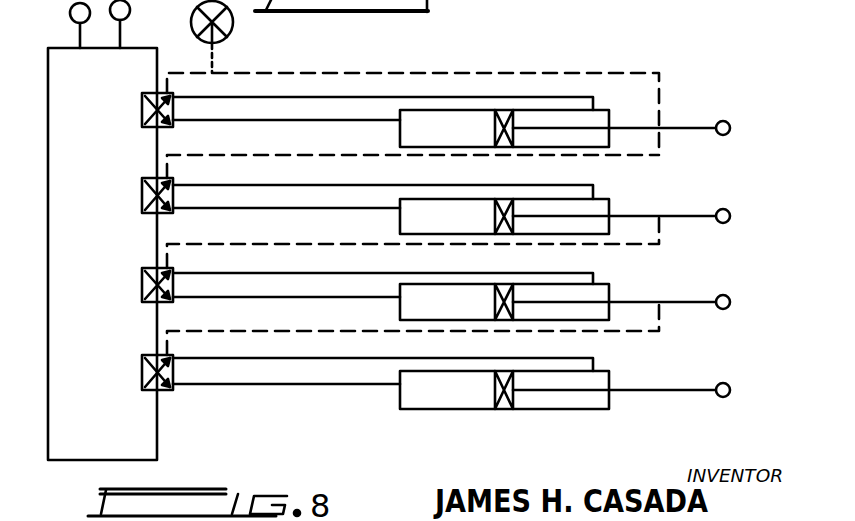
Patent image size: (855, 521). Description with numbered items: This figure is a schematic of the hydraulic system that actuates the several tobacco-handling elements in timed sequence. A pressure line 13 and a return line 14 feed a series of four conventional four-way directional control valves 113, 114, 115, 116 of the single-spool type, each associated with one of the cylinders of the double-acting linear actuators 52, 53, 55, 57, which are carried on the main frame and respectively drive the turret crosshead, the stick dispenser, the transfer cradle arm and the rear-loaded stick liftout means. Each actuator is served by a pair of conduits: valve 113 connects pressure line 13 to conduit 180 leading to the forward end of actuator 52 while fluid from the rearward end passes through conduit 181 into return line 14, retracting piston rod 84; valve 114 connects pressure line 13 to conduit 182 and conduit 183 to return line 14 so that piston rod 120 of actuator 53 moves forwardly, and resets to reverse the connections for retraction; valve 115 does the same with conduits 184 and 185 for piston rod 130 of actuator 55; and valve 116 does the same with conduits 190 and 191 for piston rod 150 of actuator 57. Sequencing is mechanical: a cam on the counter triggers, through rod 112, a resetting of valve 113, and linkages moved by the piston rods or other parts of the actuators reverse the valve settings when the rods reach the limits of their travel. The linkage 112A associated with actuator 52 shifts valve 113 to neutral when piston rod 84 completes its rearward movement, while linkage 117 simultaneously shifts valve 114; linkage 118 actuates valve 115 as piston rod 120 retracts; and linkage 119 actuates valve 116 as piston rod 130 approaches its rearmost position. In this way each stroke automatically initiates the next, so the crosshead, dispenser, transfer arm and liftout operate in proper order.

The return line 14 is at (48, 106).
The pressure line 13 is at (140, 50).
The rod 112 is at (213, 58).
The linkage 112A is at (304, 73).
The four-way directional control valve 113 is at (142, 114).
The four-way directional control valve 114 is at (142, 196).
The four-way directional control valve 115 is at (142, 286).
The four-way directional control valve 116 is at (142, 377).
The linkage 117 is at (292, 155).
The linkage 118 is at (278, 245).
The linkage 119 is at (292, 331).
The conduit 180 is at (272, 98).
The conduit 181 is at (256, 120).
The conduit 182 is at (268, 208).
The conduit 183 is at (272, 186).
The conduit 184 is at (285, 297).
The conduit 185 is at (256, 274).
The conduit 190 is at (300, 386).
The conduit 191 is at (336, 358).
The double-acting linear actuator 52 is at (400, 130).
The double-acting linear actuator 53 is at (400, 222).
The double-acting linear actuator 55 is at (400, 308).
The double-acting linear actuator 57 is at (400, 398).
The piston rod 84 is at (705, 128).
The piston rod 120 is at (706, 216).
The piston rod 130 is at (706, 302).
The piston rod 150 is at (684, 390).